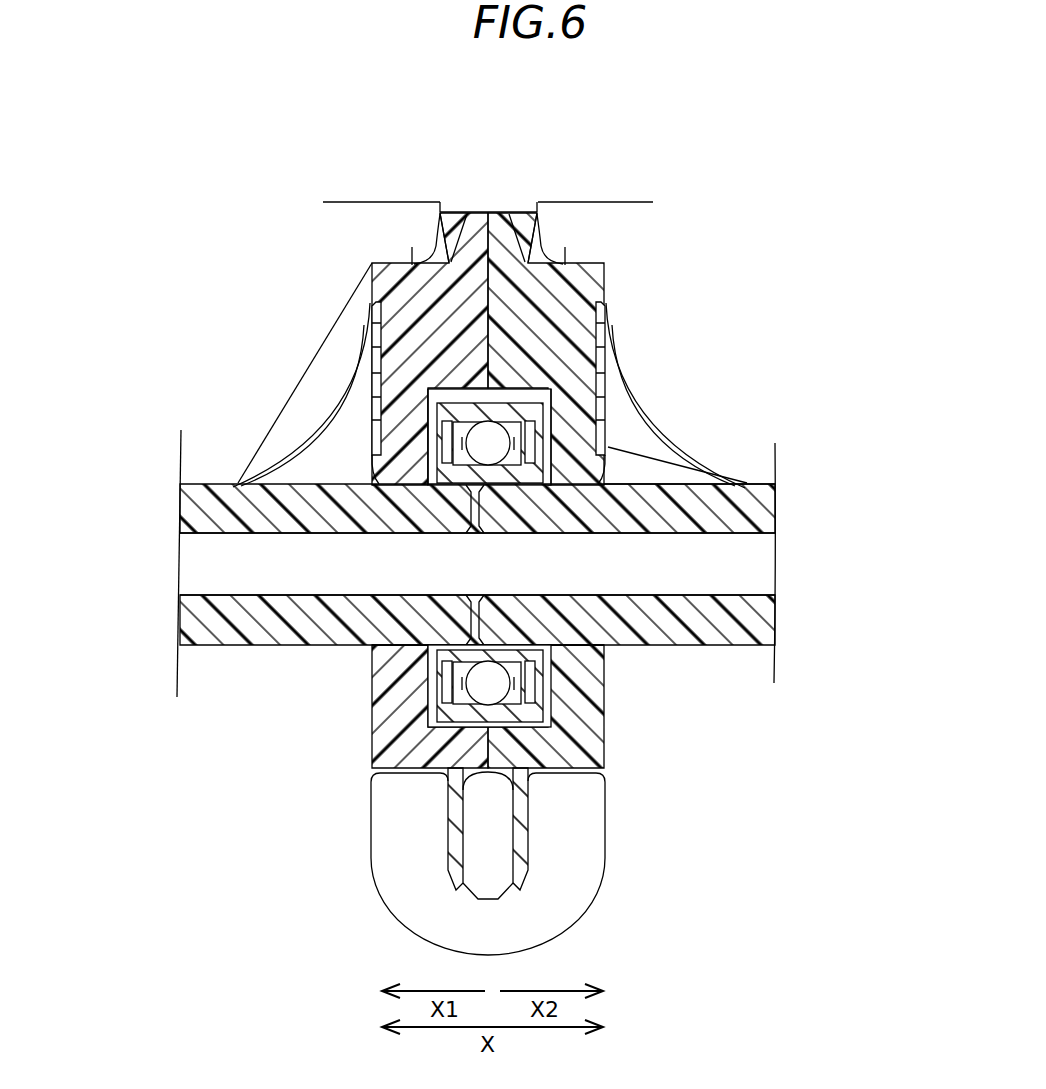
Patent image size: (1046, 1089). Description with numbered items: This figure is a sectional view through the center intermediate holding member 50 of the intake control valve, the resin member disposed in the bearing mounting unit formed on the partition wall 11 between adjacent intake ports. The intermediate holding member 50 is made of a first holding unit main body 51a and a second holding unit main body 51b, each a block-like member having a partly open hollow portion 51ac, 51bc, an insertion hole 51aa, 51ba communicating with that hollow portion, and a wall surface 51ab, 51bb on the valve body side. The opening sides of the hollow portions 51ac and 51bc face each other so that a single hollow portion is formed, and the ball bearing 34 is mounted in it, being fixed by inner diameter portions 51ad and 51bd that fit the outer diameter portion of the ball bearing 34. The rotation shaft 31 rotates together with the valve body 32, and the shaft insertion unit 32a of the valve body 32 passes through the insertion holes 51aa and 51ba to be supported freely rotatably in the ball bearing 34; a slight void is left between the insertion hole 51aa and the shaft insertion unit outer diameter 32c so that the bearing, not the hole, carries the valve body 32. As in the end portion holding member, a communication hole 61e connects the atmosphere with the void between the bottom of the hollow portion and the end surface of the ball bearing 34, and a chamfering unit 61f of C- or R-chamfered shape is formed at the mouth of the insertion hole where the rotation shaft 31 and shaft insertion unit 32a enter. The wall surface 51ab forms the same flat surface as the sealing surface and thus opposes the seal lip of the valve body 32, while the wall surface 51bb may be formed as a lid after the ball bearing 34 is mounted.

The intermediate holding member 50 is at (536, 247).
The first holding unit main body 51a is at (410, 312).
The second holding unit main body 51b is at (560, 312).
The ball bearing 34 is at (607, 322).
The hollow portion 51bc is at (552, 420).
The hollow portion 51ac is at (412, 430).
The communication hole 61e is at (425, 432).
The chamfering unit 61f is at (330, 487).
The shaft insertion unit outer diameter 32c is at (635, 484).
The valve body 32 is at (498, 545).
The shaft insertion unit 32a is at (225, 491).
The rotation shaft 31 is at (765, 565).
The insertion hole 51aa is at (383, 646).
The insertion hole 51ba is at (590, 644).
The wall surface 51ab is at (370, 672).
The wall surface 51bb is at (605, 698).
The inner diameter portion 51ad is at (370, 773).
The inner diameter portion 51bd is at (606, 767).
The partition wall 11 is at (538, 922).